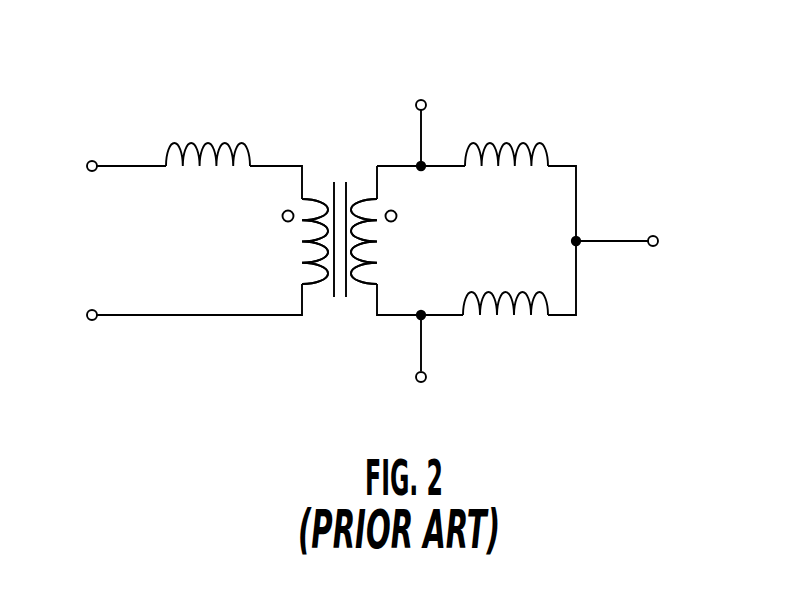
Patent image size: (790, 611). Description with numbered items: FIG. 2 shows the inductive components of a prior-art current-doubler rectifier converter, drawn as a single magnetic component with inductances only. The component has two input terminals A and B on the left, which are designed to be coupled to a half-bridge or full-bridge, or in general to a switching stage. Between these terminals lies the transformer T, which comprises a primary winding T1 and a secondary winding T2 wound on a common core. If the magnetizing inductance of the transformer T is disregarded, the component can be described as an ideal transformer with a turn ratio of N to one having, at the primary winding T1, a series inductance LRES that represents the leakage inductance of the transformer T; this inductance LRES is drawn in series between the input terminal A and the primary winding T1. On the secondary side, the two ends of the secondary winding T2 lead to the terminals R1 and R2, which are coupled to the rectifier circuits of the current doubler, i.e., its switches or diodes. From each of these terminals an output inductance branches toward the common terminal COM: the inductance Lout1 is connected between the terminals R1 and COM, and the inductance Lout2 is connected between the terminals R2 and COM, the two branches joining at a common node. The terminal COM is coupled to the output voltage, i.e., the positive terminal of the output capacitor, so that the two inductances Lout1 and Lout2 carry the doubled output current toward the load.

The input terminal A is at (98, 148).
The input terminal B is at (99, 294).
The series inductance LRES is at (232, 130).
The transformer T is at (330, 155).
The primary winding T1 is at (313, 304).
The secondary winding T2 is at (362, 304).
The terminal R1 is at (422, 83).
The terminal R2 is at (413, 399).
The output inductance Lout1 is at (532, 132).
The output inductance Lout2 is at (501, 334).
The common terminal COM is at (653, 221).